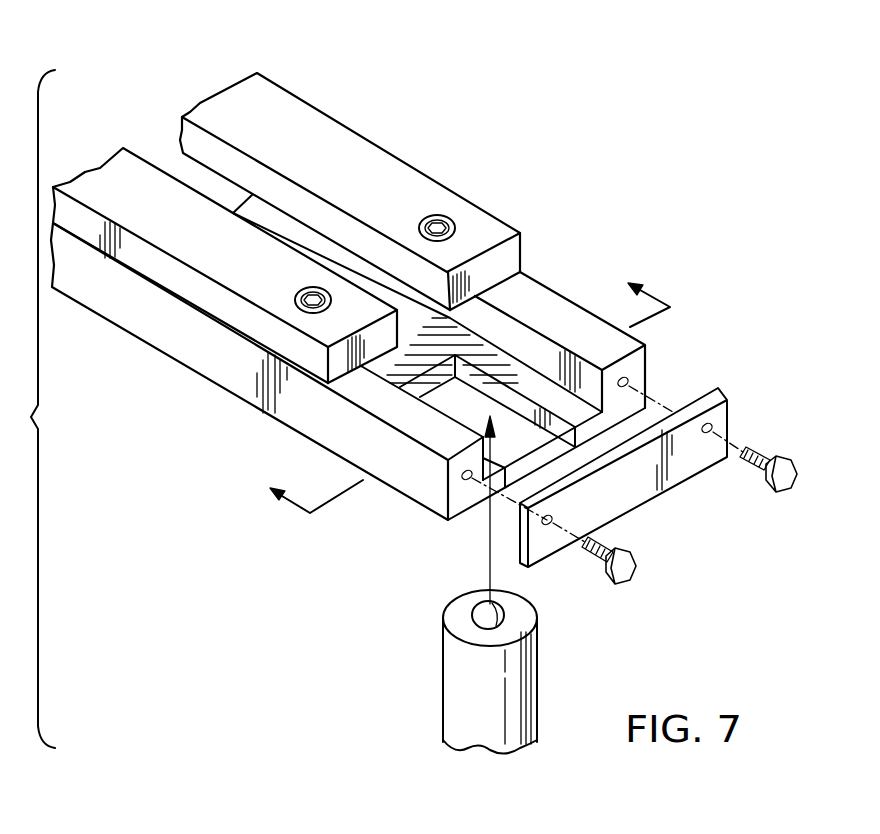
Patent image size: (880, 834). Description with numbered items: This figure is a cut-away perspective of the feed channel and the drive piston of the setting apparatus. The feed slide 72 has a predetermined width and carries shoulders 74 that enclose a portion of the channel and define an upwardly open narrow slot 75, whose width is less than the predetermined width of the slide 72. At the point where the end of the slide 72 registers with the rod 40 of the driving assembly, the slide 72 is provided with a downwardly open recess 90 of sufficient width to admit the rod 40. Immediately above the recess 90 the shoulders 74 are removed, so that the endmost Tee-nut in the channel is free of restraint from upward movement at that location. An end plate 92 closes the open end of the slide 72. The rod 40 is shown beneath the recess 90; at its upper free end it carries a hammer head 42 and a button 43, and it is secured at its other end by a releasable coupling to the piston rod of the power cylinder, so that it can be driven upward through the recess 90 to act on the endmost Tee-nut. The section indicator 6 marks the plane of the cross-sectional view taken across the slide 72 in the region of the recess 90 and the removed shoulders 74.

The section line for FIG. 6 is at (460, 392).
The rod 40 is at (455, 690).
The hammer head 42 is at (460, 618).
The button 43 is at (487, 602).
The feed slide 72 is at (547, 320).
The shoulders 74 is at (257, 110).
The slot 75 is at (335, 274).
The recess 90 is at (527, 450).
The end plate 92 is at (633, 487).